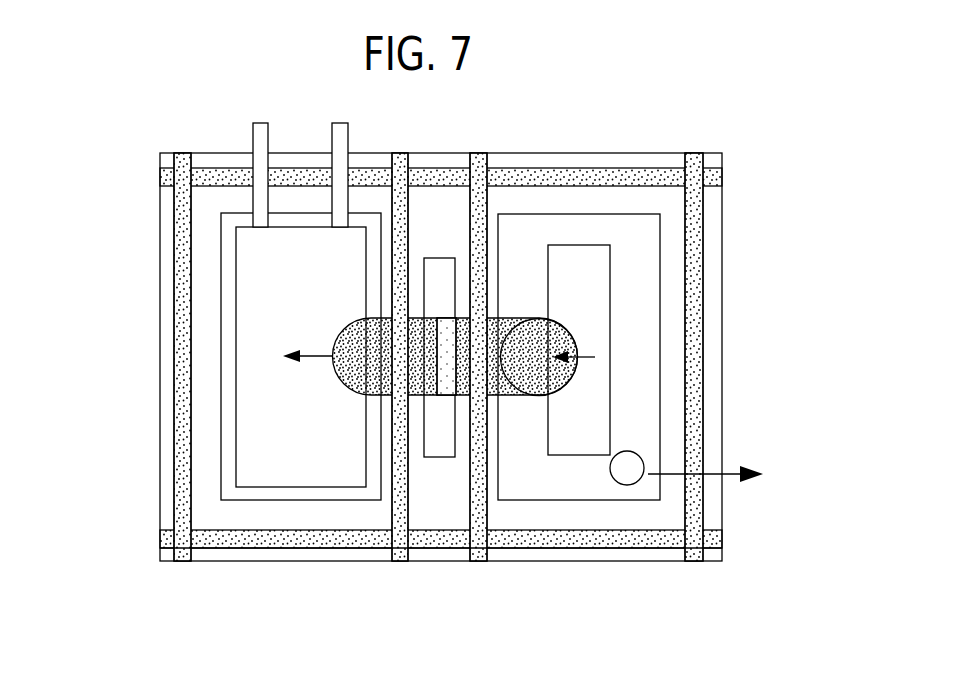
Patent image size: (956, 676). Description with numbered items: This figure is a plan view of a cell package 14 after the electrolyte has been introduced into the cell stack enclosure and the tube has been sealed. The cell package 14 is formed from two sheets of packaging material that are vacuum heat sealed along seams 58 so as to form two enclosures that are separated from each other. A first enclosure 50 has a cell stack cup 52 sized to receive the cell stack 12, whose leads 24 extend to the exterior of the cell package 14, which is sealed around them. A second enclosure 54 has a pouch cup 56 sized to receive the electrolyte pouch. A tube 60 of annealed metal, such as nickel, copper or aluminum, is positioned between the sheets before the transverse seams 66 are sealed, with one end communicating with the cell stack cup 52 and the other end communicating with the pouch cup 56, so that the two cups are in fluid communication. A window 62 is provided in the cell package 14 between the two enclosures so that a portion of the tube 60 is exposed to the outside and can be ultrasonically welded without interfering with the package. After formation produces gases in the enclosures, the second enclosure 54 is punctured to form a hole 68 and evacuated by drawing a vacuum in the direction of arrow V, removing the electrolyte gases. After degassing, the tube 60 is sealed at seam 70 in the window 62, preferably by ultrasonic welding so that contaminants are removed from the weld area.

The cell stack 12 is at (247, 281).
The cell package 14 is at (150, 436).
The leads 24 is at (250, 143).
The first enclosure 50 is at (208, 490).
The cell stack cup 52 is at (223, 343).
The second enclosure 54 is at (677, 357).
The pouch cup 56 is at (647, 403).
The seams 58 is at (657, 540).
The tube 60 is at (556, 288).
The window 62 is at (442, 268).
The transverse seams 66 is at (390, 505).
The hole 68 is at (615, 482).
The seam 70 is at (462, 340).
The arrow V is at (719, 474).